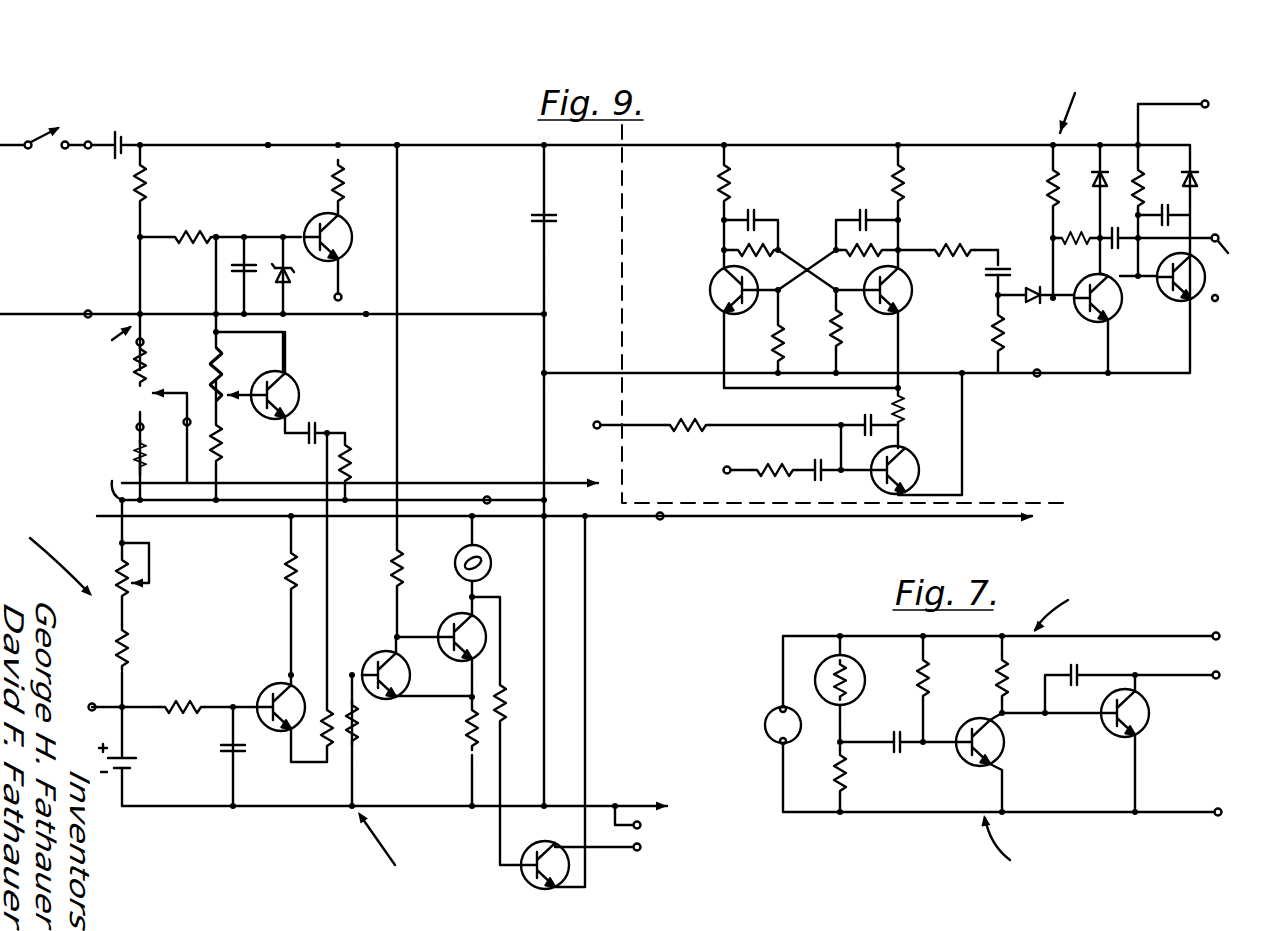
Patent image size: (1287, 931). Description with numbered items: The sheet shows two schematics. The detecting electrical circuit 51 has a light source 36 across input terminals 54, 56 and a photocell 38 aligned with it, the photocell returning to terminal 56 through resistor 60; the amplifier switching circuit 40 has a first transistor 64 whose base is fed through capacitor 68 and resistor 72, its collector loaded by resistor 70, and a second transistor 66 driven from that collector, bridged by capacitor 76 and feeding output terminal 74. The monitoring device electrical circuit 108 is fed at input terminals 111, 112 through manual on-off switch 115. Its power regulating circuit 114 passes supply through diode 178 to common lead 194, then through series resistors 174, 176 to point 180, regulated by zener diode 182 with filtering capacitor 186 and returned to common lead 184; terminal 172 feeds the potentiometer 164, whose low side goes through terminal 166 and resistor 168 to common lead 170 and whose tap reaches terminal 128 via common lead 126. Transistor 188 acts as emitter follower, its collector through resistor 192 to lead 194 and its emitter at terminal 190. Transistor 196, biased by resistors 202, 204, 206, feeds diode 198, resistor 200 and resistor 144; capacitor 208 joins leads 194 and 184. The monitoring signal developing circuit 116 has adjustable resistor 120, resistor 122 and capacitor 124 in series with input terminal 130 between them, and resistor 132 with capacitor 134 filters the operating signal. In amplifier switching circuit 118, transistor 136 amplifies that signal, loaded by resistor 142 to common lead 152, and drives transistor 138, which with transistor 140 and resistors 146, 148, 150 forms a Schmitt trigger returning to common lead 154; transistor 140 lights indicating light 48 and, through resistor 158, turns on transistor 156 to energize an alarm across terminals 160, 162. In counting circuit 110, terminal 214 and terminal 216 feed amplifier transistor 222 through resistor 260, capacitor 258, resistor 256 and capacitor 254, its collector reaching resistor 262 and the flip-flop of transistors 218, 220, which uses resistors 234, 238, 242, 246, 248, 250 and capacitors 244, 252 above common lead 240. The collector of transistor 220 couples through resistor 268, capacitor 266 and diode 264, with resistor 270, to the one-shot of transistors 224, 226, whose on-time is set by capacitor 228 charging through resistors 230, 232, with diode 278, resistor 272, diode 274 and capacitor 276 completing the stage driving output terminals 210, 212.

In FIG. 9, the manual on-off switch 115 is at (28, 130).
In FIG. 9, the input terminal 111 is at (68, 141).
In FIG. 9, the diode 178 is at (117, 132).
In FIG. 9, the common lead 194 is at (270, 143).
In FIG. 9, the monitoring device electrical circuit 108 is at (400, 140).
In FIG. 9, the resistor 174 is at (140, 185).
In FIG. 9, the resistor 176 is at (185, 230).
In FIG. 9, the regulated point 180 is at (218, 235).
In FIG. 9, the filtering capacitor 186 is at (240, 274).
In FIG. 9, the zener diode 182 is at (287, 280).
In FIG. 9, the transistor 188 is at (333, 232).
In FIG. 9, the resistor 192 is at (335, 185).
In FIG. 9, the terminal 190 is at (342, 297).
In FIG. 9, the input terminal 112 is at (89, 310).
In FIG. 9, the terminal 172 is at (144, 342).
In FIG. 9, the power regulating circuit 114 is at (112, 340).
In FIG. 9, the potentiometer 164 is at (135, 384).
In FIG. 9, the terminal 166 is at (133, 428).
In FIG. 9, the resistor 168 is at (137, 447).
In FIG. 9, the common lead 126 is at (140, 461).
In FIG. 9, the terminal 128 is at (185, 425).
In FIG. 9, the resistor 202 is at (213, 393).
In FIG. 9, the resistor 204 is at (219, 353).
In FIG. 9, the resistor 206 is at (220, 454).
In FIG. 9, the transistor 196 is at (295, 387).
In FIG. 9, the common lead 184 is at (366, 316).
In FIG. 9, the diode 198 is at (320, 426).
In FIG. 9, the resistor 200 is at (352, 460).
In FIG. 9, the common lead 170 is at (487, 496).
In FIG. 9, the capacitor 208 is at (558, 220).
In FIG. 9, the monitoring signal developing circuit 116 is at (51, 550).
In FIG. 9, the adjustable resistor 120 is at (120, 565).
In FIG. 9, the resistor 122 is at (124, 648).
In FIG. 9, the input terminal 130 is at (92, 703).
In FIG. 9, the resistor 132 is at (183, 705).
In FIG. 9, the transistor 136 is at (276, 684).
In FIG. 9, the capacitor 134 is at (227, 750).
In FIG. 9, the capacitor 124 is at (137, 763).
In FIG. 9, the resistor 142 is at (288, 570).
In FIG. 9, the resistor 146 is at (392, 570).
In FIG. 9, the transistor 138 is at (406, 678).
In FIG. 9, the transistor 140 is at (455, 616).
In FIG. 9, the indicating light 48 is at (486, 560).
In FIG. 9, the resistor 150 is at (468, 735).
In FIG. 9, the resistor 148 is at (355, 730).
In FIG. 9, the resistor 144 is at (320, 745).
In FIG. 9, the resistor 158 is at (503, 700).
In FIG. 9, the transistor 156 is at (545, 888).
In FIG. 9, the terminal 160 is at (640, 848).
In FIG. 9, the terminal 162 is at (641, 825).
In FIG. 9, the common lead 154 is at (645, 800).
In FIG. 9, the common lead 152 is at (660, 520).
In FIG. 9, the amplifier switching circuit 118 is at (413, 903).
In FIG. 9, the resistor 234 is at (722, 185).
In FIG. 9, the capacitor 244 is at (755, 213).
In FIG. 9, the resistor 242 is at (733, 248).
In FIG. 9, the transistor 218 is at (710, 292).
In FIG. 9, the resistor 238 is at (775, 333).
In FIG. 9, the resistor 246 is at (834, 320).
In FIG. 9, the resistor 250 is at (858, 263).
In FIG. 9, the capacitor 252 is at (863, 212).
In FIG. 9, the resistor 248 is at (903, 180).
In FIG. 9, the transistor 220 is at (913, 275).
In FIG. 9, the resistor 268 is at (947, 242).
In FIG. 9, the capacitor 266 is at (990, 275).
In FIG. 9, the resistor 270 is at (993, 335).
In FIG. 9, the diode 264 is at (1033, 307).
In FIG. 9, the resistor 262 is at (962, 405).
In FIG. 9, the transistor 222 is at (920, 465).
In FIG. 9, the capacitor 258 is at (862, 420).
In FIG. 9, the resistor 260 is at (677, 422).
In FIG. 9, the resistor 256 is at (770, 465).
In FIG. 9, the capacitor 254 is at (815, 480).
In FIG. 9, the terminal 214 is at (597, 422).
In FIG. 9, the terminal 216 is at (724, 470).
In FIG. 9, the common lead 240 is at (1039, 377).
In FIG. 9, the resistor 232 is at (1050, 190).
In FIG. 9, the resistor 230 is at (1078, 235).
In FIG. 9, the capacitor 228 is at (1110, 247).
In FIG. 9, the diode 278 is at (1085, 175).
In FIG. 9, the resistor 272 is at (1143, 188).
In FIG. 9, the diode 274 is at (1200, 182).
In FIG. 9, the capacitor 276 is at (1173, 210).
In FIG. 9, the output terminal 212 is at (1242, 253).
In FIG. 9, the transistor 226 is at (1205, 280).
In FIG. 9, the transistor 224 is at (1115, 312).
In FIG. 9, the output terminal 210 is at (1215, 91).
In FIG. 9, the counting circuit 110 is at (1088, 85).
In FIG. 7, the light source 36 is at (770, 720).
In FIG. 7, the photocell 38 is at (817, 652).
In FIG. 7, the resistor 60 is at (842, 778).
In FIG. 7, the capacitor 68 is at (900, 730).
In FIG. 7, the resistor 72 is at (928, 680).
In FIG. 7, the resistor 70 is at (1008, 670).
In FIG. 7, the first transistor 64 is at (1010, 746).
In FIG. 7, the capacitor 76 is at (1078, 666).
In FIG. 7, the second transistor 66 is at (1143, 717).
In FIG. 7, the electrical circuit 51 is at (1065, 604).
In FIG. 7, the input terminal 54 is at (1218, 633).
In FIG. 7, the output terminal 74 is at (1220, 678).
In FIG. 7, the input terminal 56 is at (1222, 815).
In FIG. 7, the amplifier switching circuit 40 is at (1010, 845).